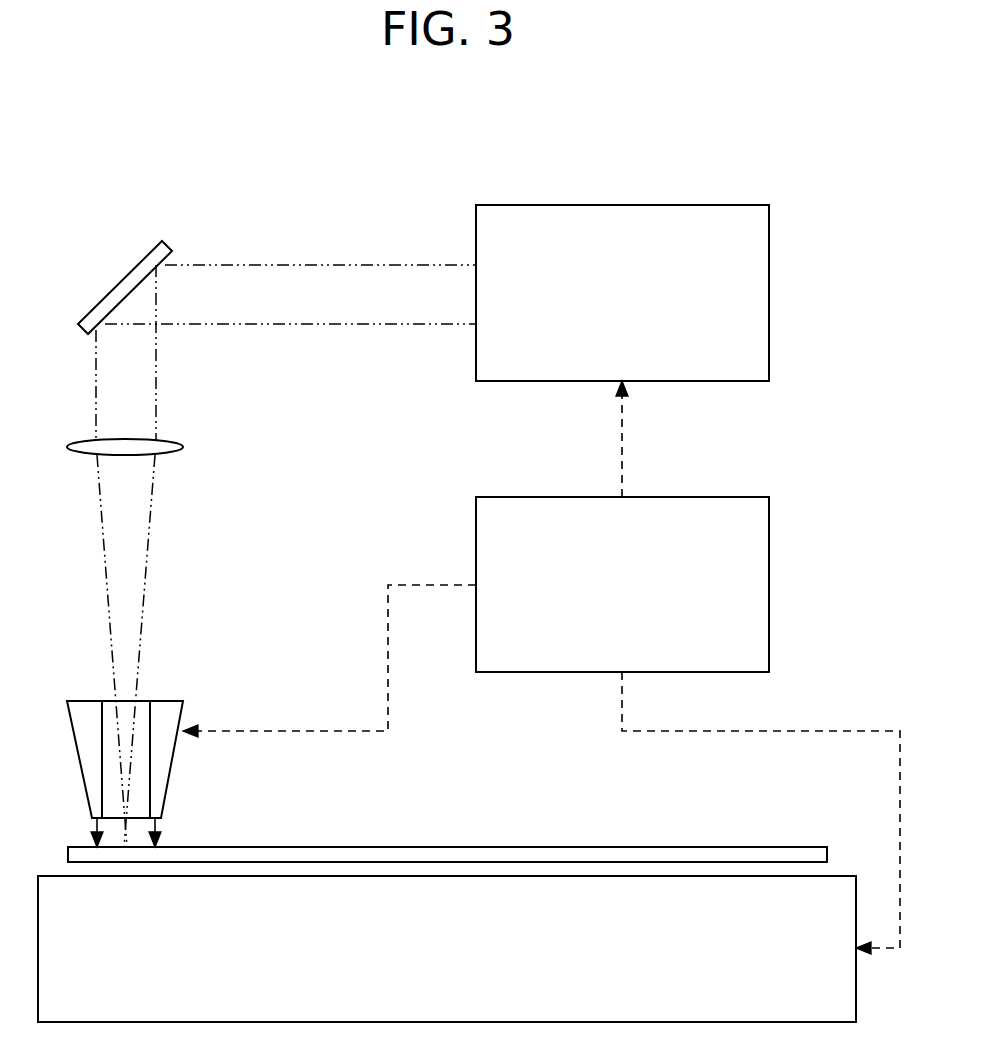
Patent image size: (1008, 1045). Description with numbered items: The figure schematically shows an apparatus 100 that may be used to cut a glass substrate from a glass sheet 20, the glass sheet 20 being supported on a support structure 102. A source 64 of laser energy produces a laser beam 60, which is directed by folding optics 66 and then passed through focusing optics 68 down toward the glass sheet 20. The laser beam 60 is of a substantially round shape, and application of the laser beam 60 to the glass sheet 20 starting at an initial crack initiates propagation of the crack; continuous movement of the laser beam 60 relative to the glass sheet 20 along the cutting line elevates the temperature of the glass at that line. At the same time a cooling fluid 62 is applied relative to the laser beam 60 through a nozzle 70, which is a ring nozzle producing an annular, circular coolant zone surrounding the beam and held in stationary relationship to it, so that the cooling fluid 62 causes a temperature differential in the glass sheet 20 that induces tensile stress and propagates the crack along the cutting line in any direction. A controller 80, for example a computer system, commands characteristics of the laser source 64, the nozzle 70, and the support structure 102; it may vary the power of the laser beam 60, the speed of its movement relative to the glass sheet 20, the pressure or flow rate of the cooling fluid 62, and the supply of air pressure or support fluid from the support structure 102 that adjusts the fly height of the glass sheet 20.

The apparatus 100 is at (423, 116).
The source of laser energy 64 is at (622, 293).
The controller 80 is at (541, 667).
The folding optics 66 is at (140, 257).
The laser beam 60 is at (112, 660).
The focusing optics 68 is at (182, 447).
The nozzle 70 is at (168, 700).
The cooling fluid 62 is at (167, 832).
The glass sheet 20 is at (375, 847).
The support structure 102 is at (447, 949).